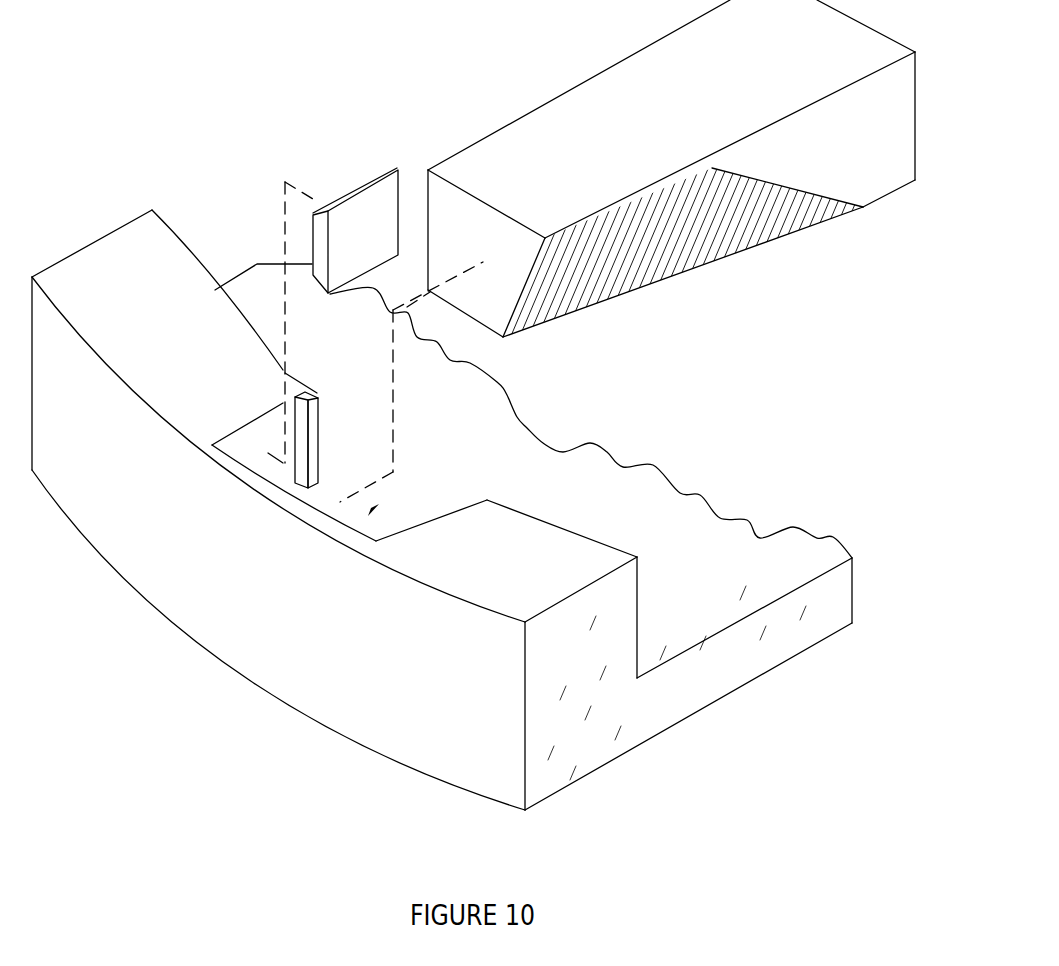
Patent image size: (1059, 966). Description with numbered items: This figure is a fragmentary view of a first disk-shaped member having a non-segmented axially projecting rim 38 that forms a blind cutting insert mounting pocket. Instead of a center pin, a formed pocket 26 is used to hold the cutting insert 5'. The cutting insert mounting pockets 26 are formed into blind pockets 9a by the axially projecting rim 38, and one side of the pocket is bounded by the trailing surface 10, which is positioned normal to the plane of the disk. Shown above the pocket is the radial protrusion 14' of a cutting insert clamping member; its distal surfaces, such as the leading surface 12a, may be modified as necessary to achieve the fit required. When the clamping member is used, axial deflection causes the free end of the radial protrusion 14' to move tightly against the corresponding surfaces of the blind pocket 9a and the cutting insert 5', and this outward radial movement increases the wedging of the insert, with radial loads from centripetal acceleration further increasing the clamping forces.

The trailing surface 10 is at (338, 288).
The cutting insert 5' is at (339, 202).
The radial protrusion 14' is at (678, 175).
The leading surface 12a is at (657, 271).
The blind pocket 9a is at (432, 459).
The formed pocket 26 is at (225, 398).
The axially projecting rim 38 is at (270, 490).